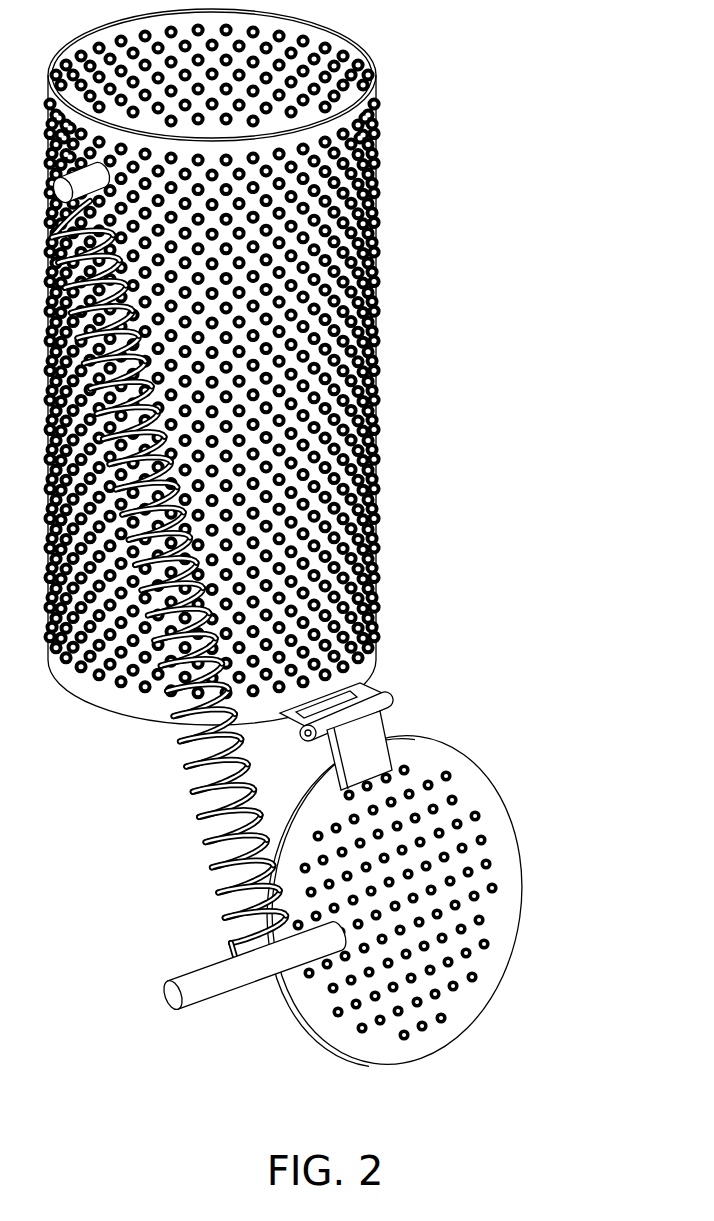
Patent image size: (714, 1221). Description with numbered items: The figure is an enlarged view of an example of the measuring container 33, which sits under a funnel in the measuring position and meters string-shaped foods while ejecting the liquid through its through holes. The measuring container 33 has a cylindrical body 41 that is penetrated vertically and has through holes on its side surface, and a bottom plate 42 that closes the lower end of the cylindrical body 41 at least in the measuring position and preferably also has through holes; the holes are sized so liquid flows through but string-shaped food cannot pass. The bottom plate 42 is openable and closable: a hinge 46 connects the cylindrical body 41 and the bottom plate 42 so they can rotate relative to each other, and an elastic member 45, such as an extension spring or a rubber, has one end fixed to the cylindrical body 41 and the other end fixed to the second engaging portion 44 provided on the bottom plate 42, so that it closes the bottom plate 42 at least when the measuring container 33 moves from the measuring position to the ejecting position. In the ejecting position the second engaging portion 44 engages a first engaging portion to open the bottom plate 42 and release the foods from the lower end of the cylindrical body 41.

The measuring container 33 is at (325, 545).
The cylindrical body 41 is at (383, 209).
The bottom plate 42 is at (504, 948).
The second engaging portion 44 is at (180, 998).
The elastic member 45 is at (195, 793).
The hinge 46 is at (388, 692).